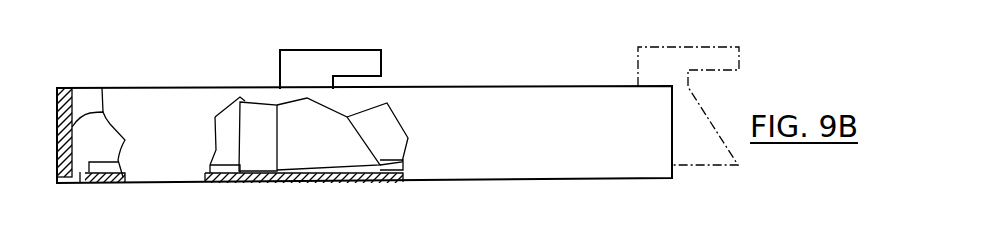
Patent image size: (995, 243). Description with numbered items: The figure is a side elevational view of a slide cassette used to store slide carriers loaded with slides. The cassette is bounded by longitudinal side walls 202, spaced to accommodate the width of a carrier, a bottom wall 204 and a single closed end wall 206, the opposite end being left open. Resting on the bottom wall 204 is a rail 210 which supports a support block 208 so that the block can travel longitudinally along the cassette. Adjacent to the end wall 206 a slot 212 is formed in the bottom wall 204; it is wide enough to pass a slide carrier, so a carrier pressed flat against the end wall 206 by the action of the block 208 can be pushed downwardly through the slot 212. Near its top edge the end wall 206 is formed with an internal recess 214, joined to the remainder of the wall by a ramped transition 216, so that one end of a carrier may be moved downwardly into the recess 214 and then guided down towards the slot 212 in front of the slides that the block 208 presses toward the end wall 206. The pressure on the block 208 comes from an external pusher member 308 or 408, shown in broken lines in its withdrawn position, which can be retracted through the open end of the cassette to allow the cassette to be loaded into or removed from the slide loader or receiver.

The longitudinal side wall 202 is at (523, 100).
The bottom wall 204 is at (110, 181).
The end wall 206 is at (58, 141).
The support block 208 is at (262, 139).
The rail 210 is at (223, 165).
The slot 212 is at (77, 175).
The internal recess 214 is at (68, 101).
The ramped transition 216 is at (104, 111).
The external pusher member 308 is at (658, 34).
The external pusher member 408 is at (331, 60).